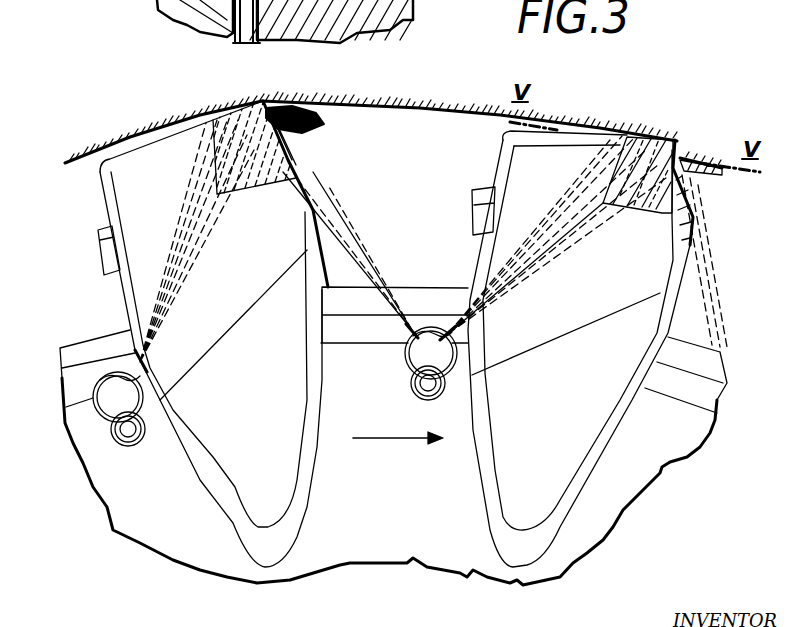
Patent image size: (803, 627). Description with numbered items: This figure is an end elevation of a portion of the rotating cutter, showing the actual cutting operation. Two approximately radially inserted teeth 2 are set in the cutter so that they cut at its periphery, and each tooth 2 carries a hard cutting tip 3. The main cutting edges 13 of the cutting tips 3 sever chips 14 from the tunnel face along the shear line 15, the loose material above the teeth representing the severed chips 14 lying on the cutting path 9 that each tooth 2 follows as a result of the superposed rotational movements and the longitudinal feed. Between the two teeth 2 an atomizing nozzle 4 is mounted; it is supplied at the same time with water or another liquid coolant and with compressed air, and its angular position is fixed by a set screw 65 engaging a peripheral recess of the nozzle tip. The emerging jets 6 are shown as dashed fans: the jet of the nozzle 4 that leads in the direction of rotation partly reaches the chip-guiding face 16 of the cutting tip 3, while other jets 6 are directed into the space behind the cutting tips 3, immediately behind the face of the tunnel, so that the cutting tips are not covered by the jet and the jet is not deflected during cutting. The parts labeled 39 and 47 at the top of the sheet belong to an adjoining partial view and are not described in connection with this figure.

The tooth 2 is at (138, 190).
The cutting tip 3 is at (252, 167).
The atomizing nozzle 4 is at (113, 402).
The jet 6 is at (167, 287).
The cutting path 9 is at (118, 137).
The main cutting edge 13 is at (262, 108).
The chip 14 is at (325, 114).
The shear line 15 is at (312, 114).
The chip-guiding face 16 is at (272, 110).
The set screw 65 is at (123, 433).
The hatched body 39 is at (318, 8).
The partial member 47 is at (157, 5).